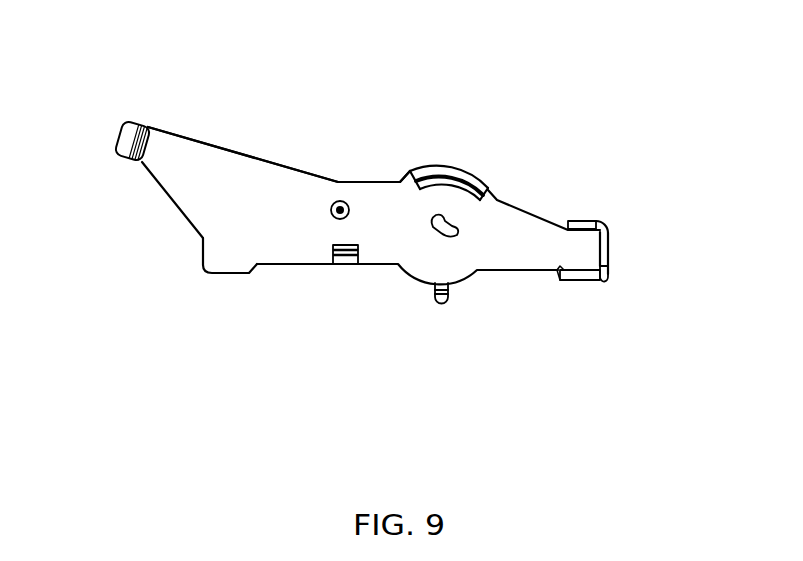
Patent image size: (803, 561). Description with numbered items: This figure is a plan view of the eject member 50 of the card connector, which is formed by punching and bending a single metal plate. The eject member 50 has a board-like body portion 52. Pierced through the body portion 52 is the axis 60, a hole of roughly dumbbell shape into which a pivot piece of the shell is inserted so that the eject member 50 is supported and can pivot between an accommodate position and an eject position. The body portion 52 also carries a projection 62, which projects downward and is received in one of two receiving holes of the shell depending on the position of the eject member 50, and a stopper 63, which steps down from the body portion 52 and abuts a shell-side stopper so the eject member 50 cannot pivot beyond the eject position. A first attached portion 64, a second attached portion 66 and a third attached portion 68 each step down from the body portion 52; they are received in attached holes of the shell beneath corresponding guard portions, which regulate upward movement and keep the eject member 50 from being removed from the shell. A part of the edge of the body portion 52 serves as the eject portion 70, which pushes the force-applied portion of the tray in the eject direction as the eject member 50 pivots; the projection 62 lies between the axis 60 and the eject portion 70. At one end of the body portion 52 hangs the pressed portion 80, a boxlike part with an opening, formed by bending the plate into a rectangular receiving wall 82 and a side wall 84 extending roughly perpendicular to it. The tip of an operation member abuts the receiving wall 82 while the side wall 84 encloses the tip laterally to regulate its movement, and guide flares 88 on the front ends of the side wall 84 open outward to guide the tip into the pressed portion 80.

The eject member 50 is at (527, 107).
The body portion 52 is at (238, 165).
The axis 60 is at (433, 236).
The projection 62 is at (340, 201).
The stopper 63 is at (337, 266).
The first attached portion 64 is at (450, 166).
The second attached portion 66 is at (440, 304).
The third attached portion 68 is at (117, 139).
The eject portion 70 is at (209, 273).
The pressed portion 80 is at (619, 242).
The receiving wall 82 is at (586, 221).
The side wall 84 is at (611, 247).
The guide flare 88 is at (612, 276).